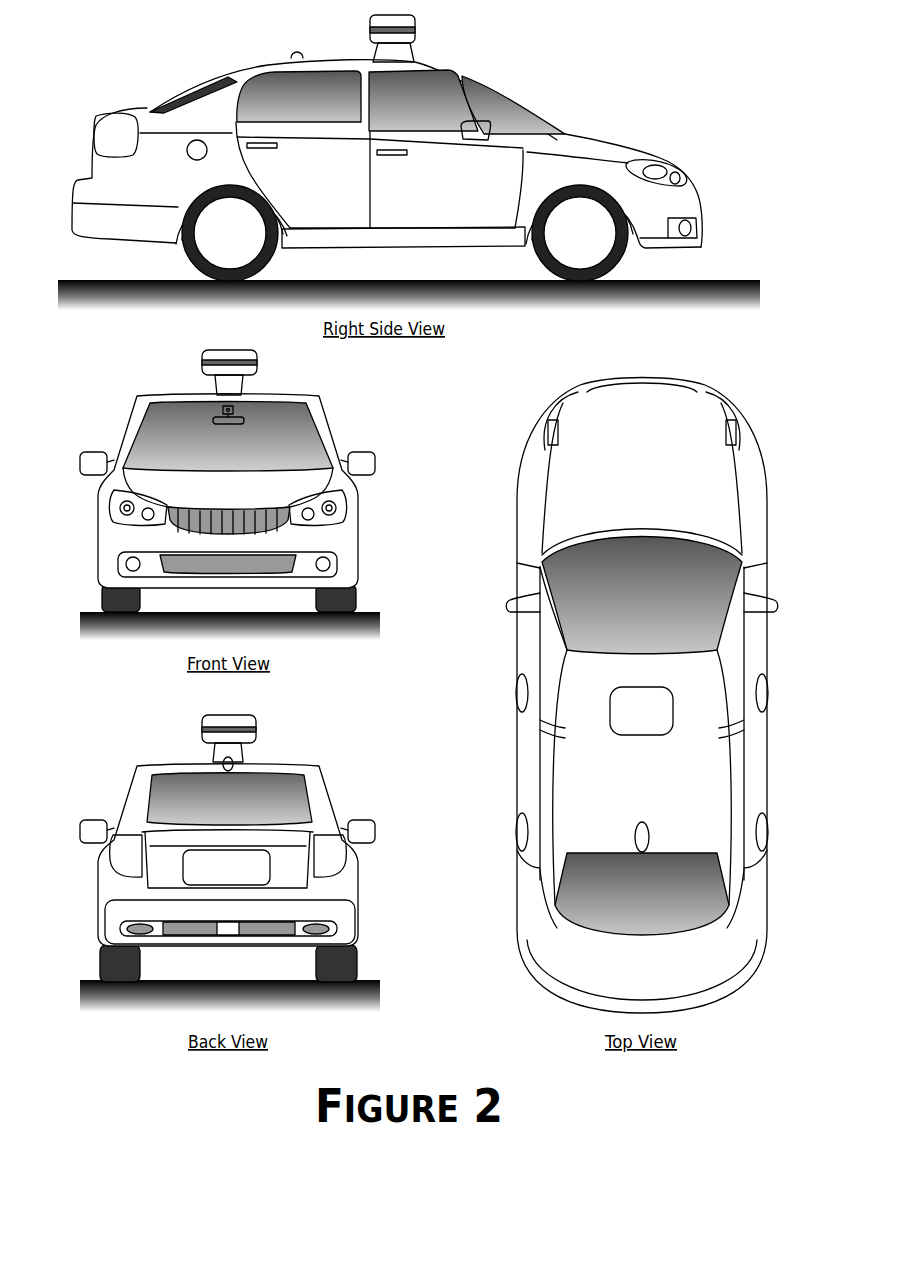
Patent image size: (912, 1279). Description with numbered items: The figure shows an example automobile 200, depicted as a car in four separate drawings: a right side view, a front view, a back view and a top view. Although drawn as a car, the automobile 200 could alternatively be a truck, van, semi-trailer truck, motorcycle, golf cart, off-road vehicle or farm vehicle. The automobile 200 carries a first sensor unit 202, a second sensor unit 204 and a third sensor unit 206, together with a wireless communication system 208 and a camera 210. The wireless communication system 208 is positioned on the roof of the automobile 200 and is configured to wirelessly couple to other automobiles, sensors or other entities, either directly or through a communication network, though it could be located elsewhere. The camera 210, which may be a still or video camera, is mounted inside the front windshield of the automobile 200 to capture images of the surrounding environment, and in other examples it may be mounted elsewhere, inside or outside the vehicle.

The automobile 200 is at (70, 102).
The first sensor unit 202 is at (415, 32).
The second sensor unit 204 is at (684, 180).
The third sensor unit 206 is at (698, 226).
The wireless communication system 208 is at (292, 52).
The camera 210 is at (233, 410).